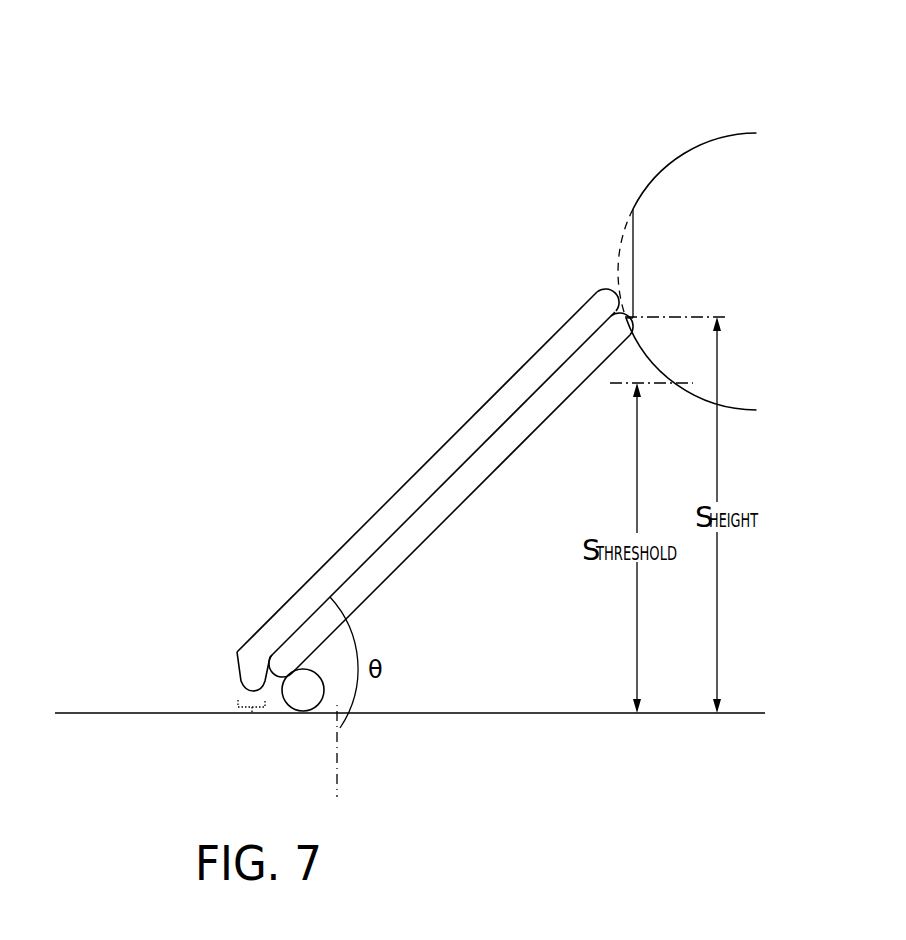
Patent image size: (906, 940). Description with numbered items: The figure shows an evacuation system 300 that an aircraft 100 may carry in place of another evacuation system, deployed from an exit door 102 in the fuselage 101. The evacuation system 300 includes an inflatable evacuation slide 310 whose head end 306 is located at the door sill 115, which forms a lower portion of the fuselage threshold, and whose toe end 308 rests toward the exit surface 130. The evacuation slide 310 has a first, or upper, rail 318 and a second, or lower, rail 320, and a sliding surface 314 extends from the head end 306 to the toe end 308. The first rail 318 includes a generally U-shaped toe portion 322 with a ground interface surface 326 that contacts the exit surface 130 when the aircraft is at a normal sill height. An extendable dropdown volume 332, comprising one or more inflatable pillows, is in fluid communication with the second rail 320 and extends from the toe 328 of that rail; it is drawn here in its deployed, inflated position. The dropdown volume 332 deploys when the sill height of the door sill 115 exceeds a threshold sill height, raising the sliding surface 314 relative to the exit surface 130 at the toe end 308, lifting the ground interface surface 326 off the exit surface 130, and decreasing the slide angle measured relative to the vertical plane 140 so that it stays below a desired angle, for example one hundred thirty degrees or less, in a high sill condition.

The aircraft 100 is at (676, 228).
The fuselage 101 is at (660, 171).
The exit door 102 is at (634, 228).
The door sill 115 is at (635, 314).
The exit surface 130 is at (72, 712).
The vertical plane 140 is at (338, 788).
The evacuation system 300 is at (396, 514).
The head end 306 is at (605, 290).
The toe end 308 is at (215, 658).
The inflatable evacuation slide 310 is at (396, 514).
The sliding surface 314 is at (343, 582).
The first rail 318 is at (387, 498).
The second rail 320 is at (503, 447).
The toe portion 322 is at (251, 721).
The ground interface surface 326 is at (238, 702).
The toe 328 is at (273, 676).
The extendable dropdown volume 332 is at (301, 697).